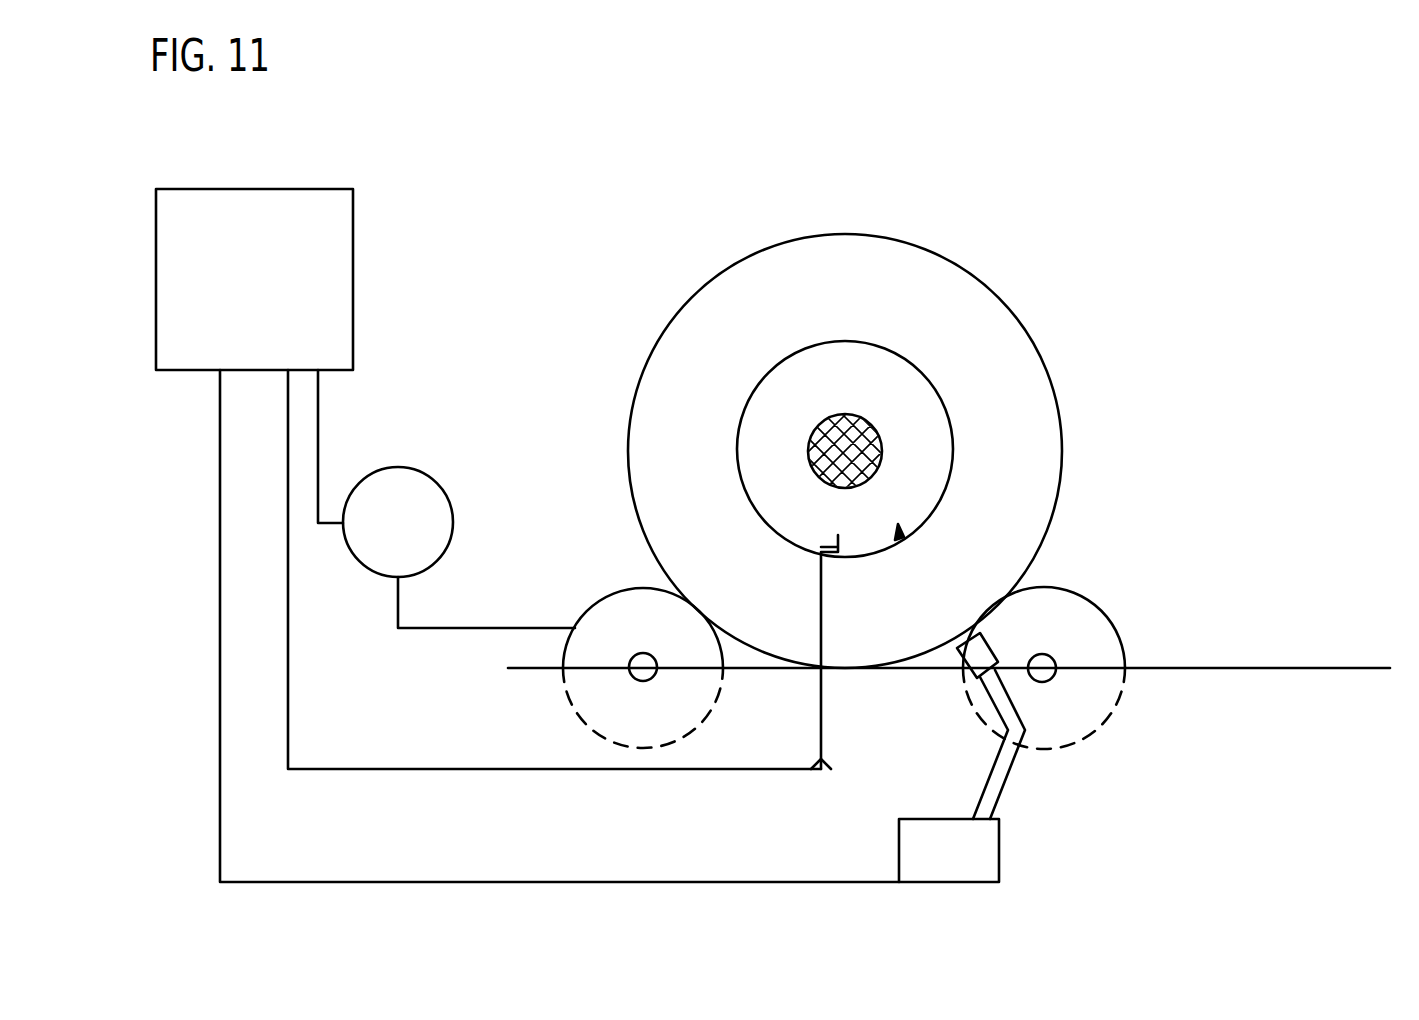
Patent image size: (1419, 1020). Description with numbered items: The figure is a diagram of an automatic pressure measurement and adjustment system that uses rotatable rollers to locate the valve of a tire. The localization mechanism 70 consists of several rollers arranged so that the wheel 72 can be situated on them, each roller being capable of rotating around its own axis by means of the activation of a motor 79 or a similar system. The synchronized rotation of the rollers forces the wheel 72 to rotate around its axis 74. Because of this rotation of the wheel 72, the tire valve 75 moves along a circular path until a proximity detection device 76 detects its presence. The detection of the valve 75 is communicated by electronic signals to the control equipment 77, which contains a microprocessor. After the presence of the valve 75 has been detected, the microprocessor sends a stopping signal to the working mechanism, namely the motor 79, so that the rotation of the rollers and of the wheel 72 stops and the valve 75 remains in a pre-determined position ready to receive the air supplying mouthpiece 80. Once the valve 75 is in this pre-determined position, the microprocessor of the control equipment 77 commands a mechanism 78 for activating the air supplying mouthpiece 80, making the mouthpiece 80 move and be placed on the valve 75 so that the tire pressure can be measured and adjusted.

The localization mechanism 70 is at (1125, 556).
The wheel 72 is at (935, 251).
The axis 74 is at (880, 426).
The tire valve 75 is at (908, 535).
The proximity detection device 76 is at (820, 552).
The control equipment 77 is at (322, 260).
The mechanism for activating the air supplying mouthpiece 78 is at (972, 868).
The motor 79 is at (415, 490).
The air supplying mouthpiece 80 is at (962, 668).